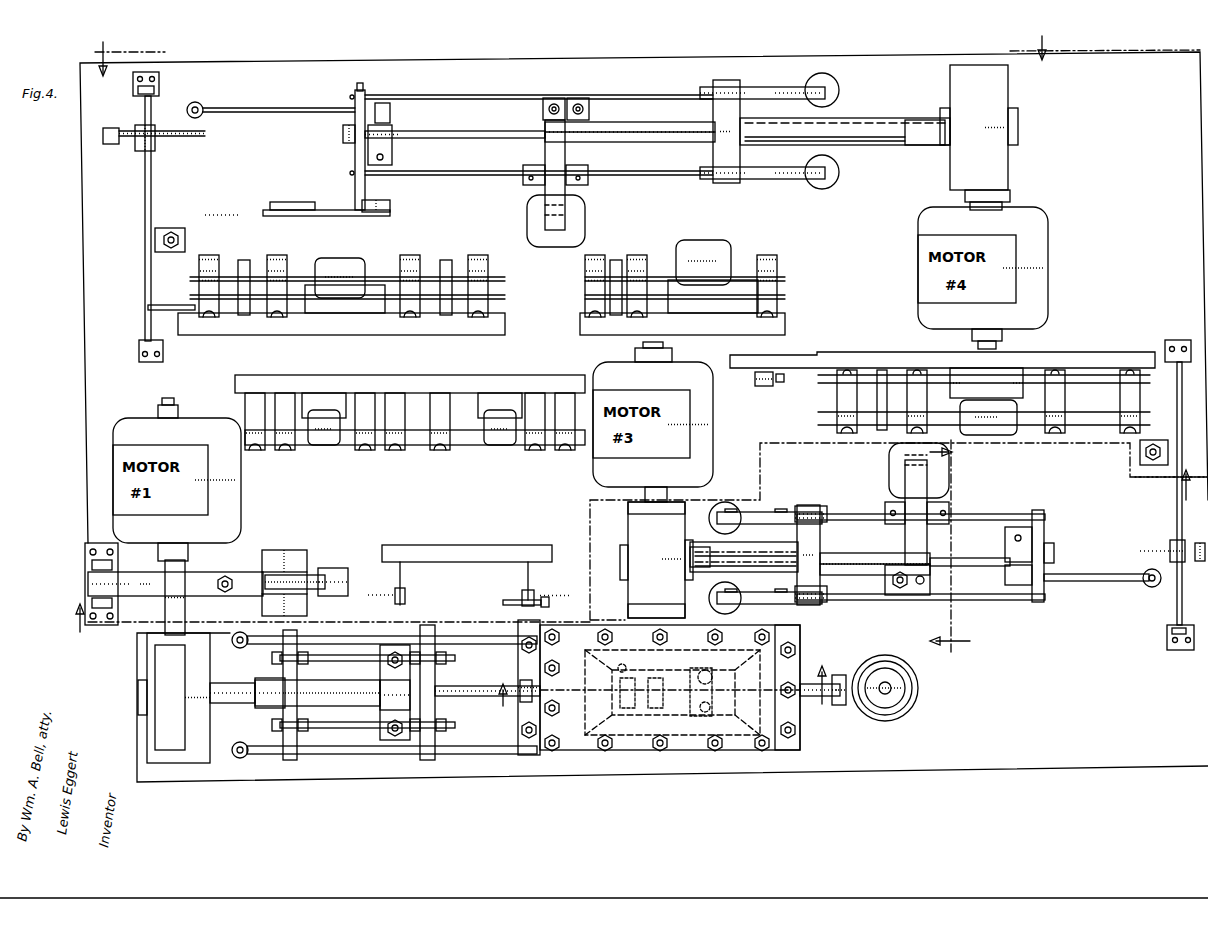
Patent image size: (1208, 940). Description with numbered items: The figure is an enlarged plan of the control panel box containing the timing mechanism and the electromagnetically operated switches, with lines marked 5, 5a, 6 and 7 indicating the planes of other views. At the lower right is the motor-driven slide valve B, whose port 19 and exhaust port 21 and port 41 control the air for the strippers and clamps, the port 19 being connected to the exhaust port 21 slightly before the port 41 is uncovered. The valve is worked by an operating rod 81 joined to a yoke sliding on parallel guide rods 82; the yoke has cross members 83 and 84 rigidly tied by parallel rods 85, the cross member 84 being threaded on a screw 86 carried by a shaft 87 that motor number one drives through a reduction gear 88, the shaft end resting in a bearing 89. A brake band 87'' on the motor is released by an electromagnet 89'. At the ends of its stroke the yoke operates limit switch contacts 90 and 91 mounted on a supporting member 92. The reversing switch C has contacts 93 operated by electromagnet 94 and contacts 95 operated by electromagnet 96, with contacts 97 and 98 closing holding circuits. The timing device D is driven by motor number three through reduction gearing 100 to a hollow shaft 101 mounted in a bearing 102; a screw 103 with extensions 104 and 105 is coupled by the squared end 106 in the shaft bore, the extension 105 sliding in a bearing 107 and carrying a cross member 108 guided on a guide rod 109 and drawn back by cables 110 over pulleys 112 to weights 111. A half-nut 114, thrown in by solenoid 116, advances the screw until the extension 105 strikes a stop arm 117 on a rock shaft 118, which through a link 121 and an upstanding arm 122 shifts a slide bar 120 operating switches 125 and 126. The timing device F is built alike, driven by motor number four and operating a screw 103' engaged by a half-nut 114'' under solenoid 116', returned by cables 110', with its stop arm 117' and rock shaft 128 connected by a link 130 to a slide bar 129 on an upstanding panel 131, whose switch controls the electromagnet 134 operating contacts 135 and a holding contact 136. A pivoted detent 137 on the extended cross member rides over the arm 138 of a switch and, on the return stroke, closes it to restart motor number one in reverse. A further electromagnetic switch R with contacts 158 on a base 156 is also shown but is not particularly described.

The section line 5- 5 is at (641, 55).
The section line 5a- 5a is at (959, 555).
The mold plate 6 is at (636, 551).
The section line 7- 7 is at (661, 693).
The port 19 is at (722, 684).
The exhaust port 21 is at (690, 670).
The port 41 is at (622, 668).
The operating rod 81 is at (490, 690).
The parallel guide rods 82 is at (455, 634).
The cross member 83 is at (425, 672).
The cross member 84 is at (283, 668).
The parallel rods 85 is at (340, 700).
The screw 86 is at (320, 740).
The shaft 87 is at (232, 706).
The brake band 87'' is at (175, 562).
The reduction gear 88 is at (290, 580).
The bearing 89 is at (412, 699).
The electromagnet 89' is at (284, 563).
The limit switch contacts 90 is at (410, 592).
The limit switch contacts 91 is at (520, 593).
The supporting member 92 is at (470, 561).
The switch contacts 93 is at (285, 450).
The electromagnet 94 is at (325, 450).
The switch contacts 95 is at (440, 450).
The electromagnet 96 is at (500, 450).
The switch contacts 97 is at (255, 450).
The switch contacts 98 is at (565, 450).
The reduction gearing 100 is at (640, 527).
The hollow shaft 101 is at (728, 540).
The bearing 102 is at (818, 550).
The screw 103 is at (875, 556).
The screw 103' is at (630, 142).
The extension 104 is at (790, 560).
The extension 105 is at (968, 560).
The squared end 106 is at (732, 600).
The bearing 107 is at (1020, 535).
The cross member 108 is at (368, 160).
The guide rod 109 is at (1105, 583).
The cables 110 is at (921, 576).
The cables 110' is at (450, 135).
The weights 111 is at (730, 510).
The pulleys 112 is at (805, 508).
The half-nut 114 is at (940, 527).
The rod 114'' is at (444, 143).
The solenoid 116 is at (902, 470).
The solenoid 116' is at (574, 183).
The stop arm 117 is at (1171, 538).
The adjusting screw 117' is at (155, 147).
The rock shaft 118 is at (1177, 501).
The slide bar 120 is at (830, 373).
The link 121 is at (907, 405).
The upstanding arm 122 is at (986, 401).
The switch 125 is at (1123, 370).
The switch 126 is at (772, 386).
The rock shaft 128 is at (152, 187).
The slide bar 129 is at (300, 300).
The link 130 is at (172, 305).
The upstanding panel 131 is at (383, 333).
The electromagnet 134 is at (345, 285).
The switch contacts 135 is at (215, 266).
The switch contact 136 is at (478, 266).
The pivoted detent 137 is at (392, 202).
The arm 138 is at (297, 197).
The relay base 156 is at (718, 306).
The relay contacts 158 is at (637, 263).
The slide valve B is at (670, 688).
The reversing switch C is at (410, 422).
The timing device D is at (899, 531).
The timing device F is at (583, 109).
The relay R is at (713, 276).